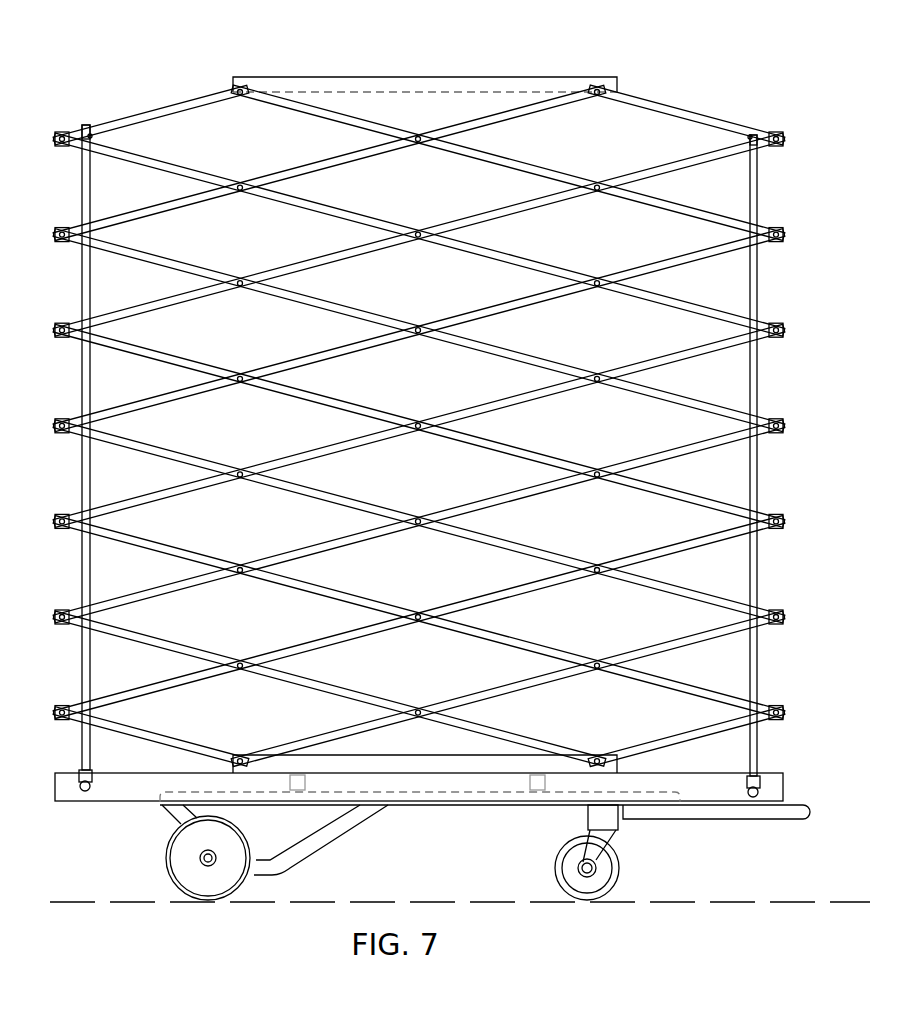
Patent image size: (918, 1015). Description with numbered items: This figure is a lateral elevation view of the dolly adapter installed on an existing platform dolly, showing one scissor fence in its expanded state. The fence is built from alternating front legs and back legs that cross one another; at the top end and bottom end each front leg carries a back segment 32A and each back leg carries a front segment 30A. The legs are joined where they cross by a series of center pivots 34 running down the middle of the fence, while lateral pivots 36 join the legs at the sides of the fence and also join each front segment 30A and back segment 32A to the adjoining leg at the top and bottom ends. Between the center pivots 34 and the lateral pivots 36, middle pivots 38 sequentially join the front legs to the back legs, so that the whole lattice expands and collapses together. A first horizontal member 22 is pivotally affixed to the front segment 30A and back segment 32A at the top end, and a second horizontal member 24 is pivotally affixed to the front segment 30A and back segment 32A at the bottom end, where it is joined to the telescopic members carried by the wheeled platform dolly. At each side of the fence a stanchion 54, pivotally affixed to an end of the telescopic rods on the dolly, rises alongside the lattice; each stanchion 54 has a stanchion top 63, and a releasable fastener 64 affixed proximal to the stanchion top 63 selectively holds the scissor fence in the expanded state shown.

The first horizontal member 22 is at (405, 77).
The second horizontal member 24 is at (418, 778).
The front segment 30A is at (655, 106).
The back segment 32A is at (190, 103).
The center pivot 34 is at (418, 143).
The lateral pivot 36 is at (62, 136).
The middle pivot 38 is at (240, 96).
The stanchion 54 is at (84, 462).
The stanchion top 63 is at (86, 125).
The releasable fastener 64 is at (93, 138).